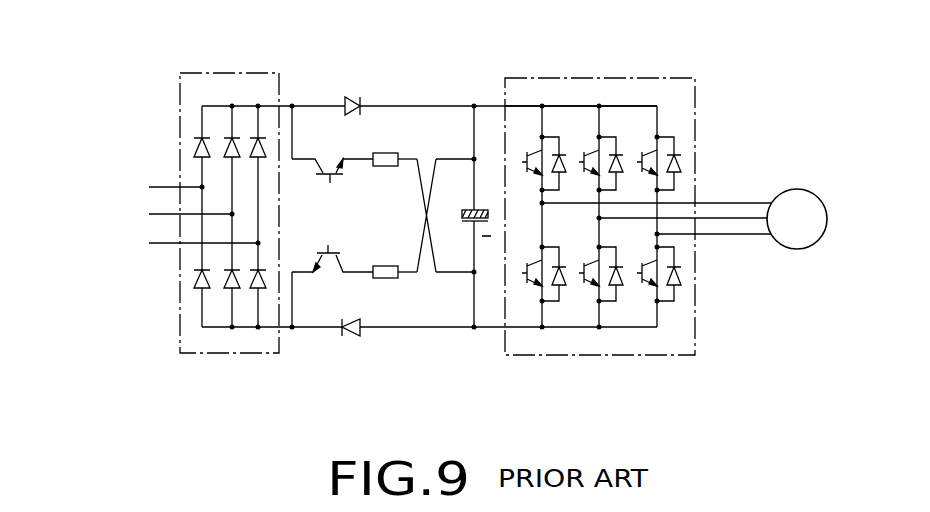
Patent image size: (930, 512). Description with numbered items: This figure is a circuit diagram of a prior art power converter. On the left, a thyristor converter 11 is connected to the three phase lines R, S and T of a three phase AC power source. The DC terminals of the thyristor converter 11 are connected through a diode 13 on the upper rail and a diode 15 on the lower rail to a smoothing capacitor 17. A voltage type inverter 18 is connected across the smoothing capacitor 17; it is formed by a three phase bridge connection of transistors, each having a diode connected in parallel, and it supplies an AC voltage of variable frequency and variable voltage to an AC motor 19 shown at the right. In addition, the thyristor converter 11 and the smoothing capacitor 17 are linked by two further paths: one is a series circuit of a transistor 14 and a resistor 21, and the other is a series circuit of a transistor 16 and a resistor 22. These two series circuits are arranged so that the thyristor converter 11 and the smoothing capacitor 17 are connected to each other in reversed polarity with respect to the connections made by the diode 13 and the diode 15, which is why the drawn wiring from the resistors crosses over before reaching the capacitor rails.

The thyristor converter 11 is at (235, 73).
The diode 13 is at (355, 100).
The transistor 14 is at (326, 262).
The diode 15 is at (354, 319).
The transistor 16 is at (324, 176).
The smoothing capacitor 17 is at (459, 218).
The voltage type inverter 18 is at (625, 78).
The AC motor 19 is at (792, 189).
The resistor 21 is at (386, 266).
The resistor 22 is at (385, 166).